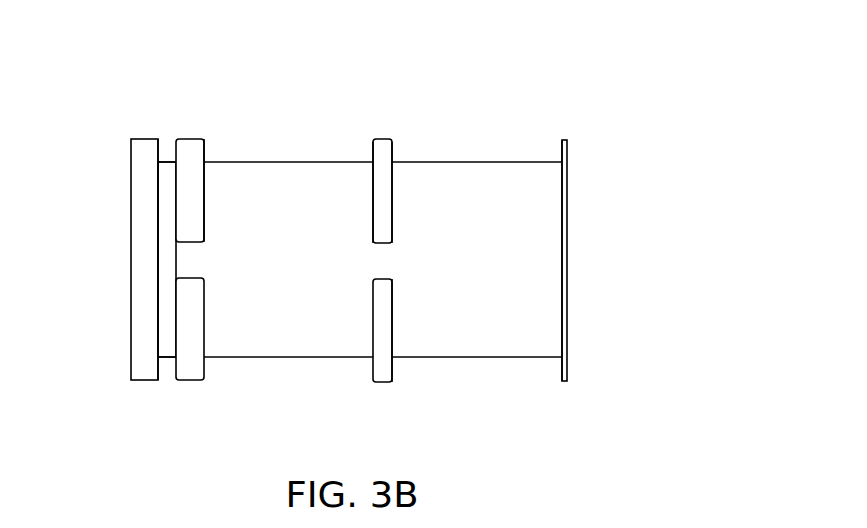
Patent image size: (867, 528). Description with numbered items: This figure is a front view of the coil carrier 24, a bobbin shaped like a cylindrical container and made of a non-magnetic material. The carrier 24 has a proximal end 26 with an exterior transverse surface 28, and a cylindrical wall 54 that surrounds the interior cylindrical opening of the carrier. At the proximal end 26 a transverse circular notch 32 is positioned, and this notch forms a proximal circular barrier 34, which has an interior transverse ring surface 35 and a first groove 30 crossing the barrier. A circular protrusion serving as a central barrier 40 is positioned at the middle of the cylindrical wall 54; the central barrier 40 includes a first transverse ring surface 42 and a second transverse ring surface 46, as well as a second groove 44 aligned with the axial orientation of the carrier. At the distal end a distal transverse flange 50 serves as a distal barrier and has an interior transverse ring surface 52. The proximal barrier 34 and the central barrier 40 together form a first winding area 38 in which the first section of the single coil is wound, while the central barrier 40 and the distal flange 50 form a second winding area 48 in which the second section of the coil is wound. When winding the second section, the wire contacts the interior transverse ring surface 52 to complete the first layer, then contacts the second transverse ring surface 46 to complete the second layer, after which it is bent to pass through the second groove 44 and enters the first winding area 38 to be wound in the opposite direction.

The coil carrier 24 is at (650, 122).
The proximal end 26 is at (116, 126).
The exterior transverse surface 28 is at (132, 200).
The first groove 30 is at (192, 262).
The transverse circular notch 32 is at (167, 147).
The proximal circular barrier 34 is at (192, 150).
The interior transverse ring surface 35 is at (207, 155).
The first winding area 38 is at (268, 152).
The central barrier 40 is at (387, 147).
The first transverse ring surface 42 is at (373, 148).
The second groove 44 is at (384, 256).
The second transverse ring surface 46 is at (392, 149).
The second winding area 48 is at (506, 150).
The distal transverse flange 50 is at (563, 140).
The interior transverse ring surface 52 is at (562, 150).
The cylindrical wall 54 is at (272, 272).